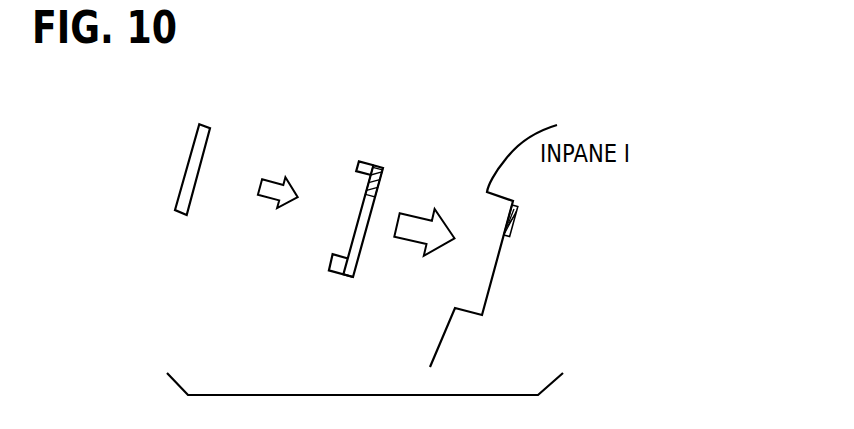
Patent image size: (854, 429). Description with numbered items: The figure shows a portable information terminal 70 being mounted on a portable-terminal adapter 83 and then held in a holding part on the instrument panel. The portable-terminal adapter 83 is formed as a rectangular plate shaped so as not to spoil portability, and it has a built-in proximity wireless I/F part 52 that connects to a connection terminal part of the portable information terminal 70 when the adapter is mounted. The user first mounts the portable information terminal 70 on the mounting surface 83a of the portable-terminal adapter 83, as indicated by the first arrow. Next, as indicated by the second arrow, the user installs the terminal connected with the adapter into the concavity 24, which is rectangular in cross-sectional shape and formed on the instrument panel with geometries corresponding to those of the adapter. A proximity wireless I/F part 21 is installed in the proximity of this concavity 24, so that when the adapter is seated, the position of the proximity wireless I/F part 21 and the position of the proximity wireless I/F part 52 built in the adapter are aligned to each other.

The portable information terminal 70 is at (190, 143).
The portable-terminal adapter 83 is at (333, 227).
The mounting surface 83a is at (352, 238).
The proximity wireless I/F part 52 is at (378, 167).
The concavity 24 is at (490, 280).
The proximity wireless I/F part 21 is at (517, 223).